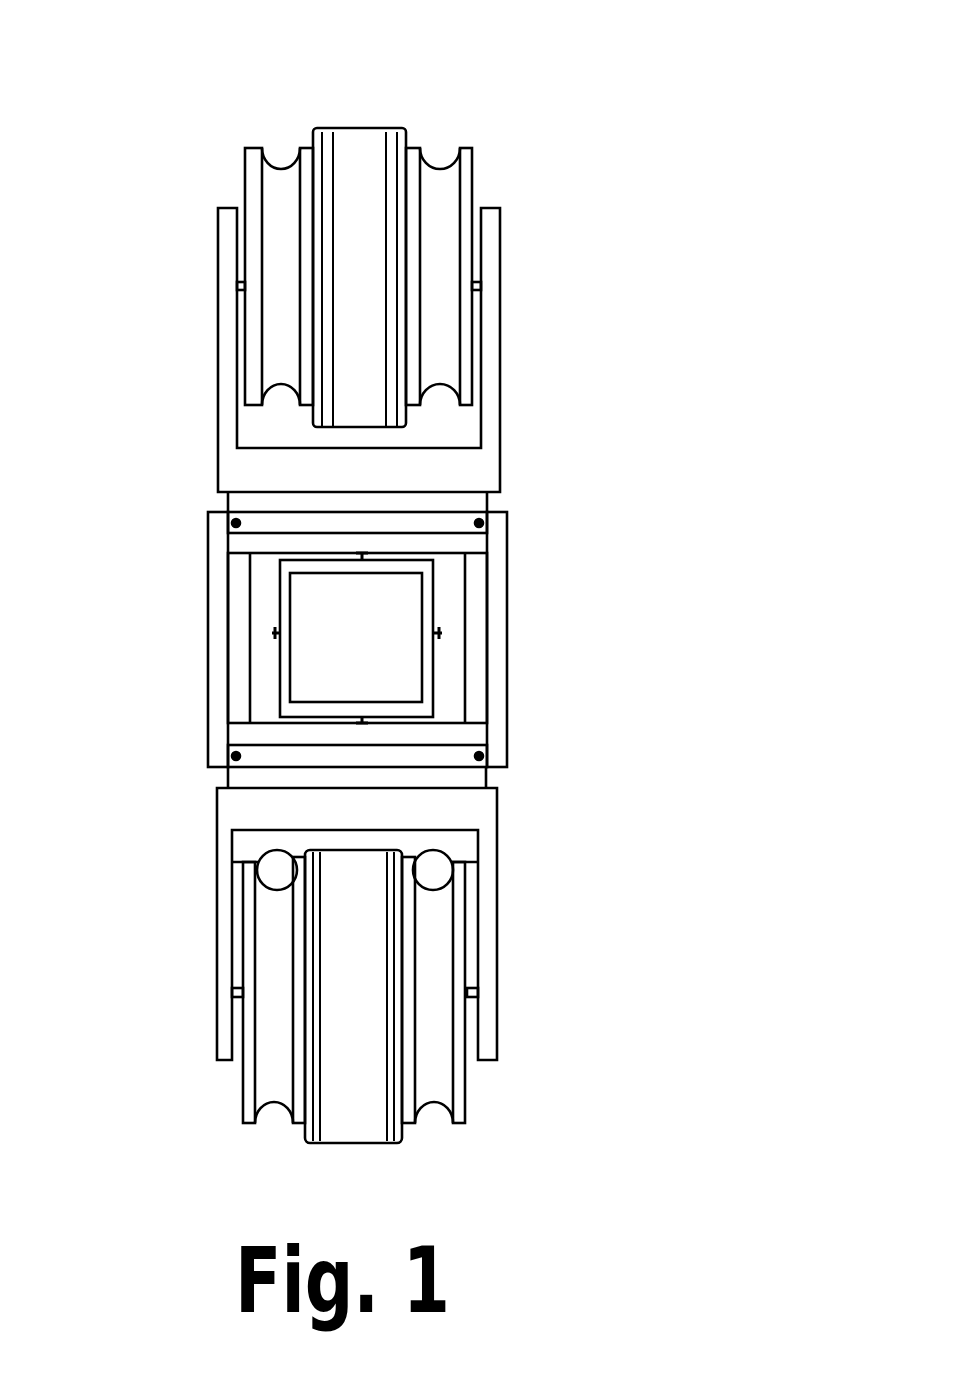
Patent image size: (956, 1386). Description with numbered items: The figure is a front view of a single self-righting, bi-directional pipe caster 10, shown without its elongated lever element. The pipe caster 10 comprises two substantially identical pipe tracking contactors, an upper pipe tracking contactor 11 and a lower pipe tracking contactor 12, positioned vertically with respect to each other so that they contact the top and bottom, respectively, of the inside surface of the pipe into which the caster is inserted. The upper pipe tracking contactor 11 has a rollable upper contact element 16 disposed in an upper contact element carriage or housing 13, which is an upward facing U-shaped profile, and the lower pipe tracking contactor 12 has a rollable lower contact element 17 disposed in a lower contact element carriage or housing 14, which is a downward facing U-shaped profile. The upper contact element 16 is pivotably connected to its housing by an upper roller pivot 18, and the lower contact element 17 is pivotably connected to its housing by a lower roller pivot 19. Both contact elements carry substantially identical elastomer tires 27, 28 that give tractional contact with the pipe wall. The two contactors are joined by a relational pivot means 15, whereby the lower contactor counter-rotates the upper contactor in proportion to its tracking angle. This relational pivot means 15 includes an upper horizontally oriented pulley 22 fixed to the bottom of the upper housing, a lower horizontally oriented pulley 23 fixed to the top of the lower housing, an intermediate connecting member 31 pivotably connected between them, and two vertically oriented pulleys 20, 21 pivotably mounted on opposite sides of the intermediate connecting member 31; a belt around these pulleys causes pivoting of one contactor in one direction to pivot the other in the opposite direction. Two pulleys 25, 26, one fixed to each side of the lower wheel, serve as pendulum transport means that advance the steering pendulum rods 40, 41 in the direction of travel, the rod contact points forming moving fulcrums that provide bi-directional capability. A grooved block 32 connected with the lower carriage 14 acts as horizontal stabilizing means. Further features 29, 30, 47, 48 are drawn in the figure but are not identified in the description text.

The pipe caster 10 is at (540, 150).
The upper pipe tracking contactor 11 is at (195, 290).
The lower pipe tracking contactor 12 is at (183, 958).
The upper contact element carriage or housing 13 is at (500, 320).
The lower contact element carriage or housing 14 is at (497, 890).
The relational pivot means 15 is at (563, 611).
The rollable upper contact element 16 is at (385, 128).
The rollable lower contact element 17 is at (372, 1146).
The upper roller pivot 18 is at (479, 282).
The lower roller pivot 19 is at (470, 988).
The vertically oriented pulley 20 is at (208, 620).
The vertically oriented pulley 21 is at (507, 640).
The upper horizontally oriented pulley 22 is at (487, 510).
The lower horizontally oriented pulley 23 is at (225, 768).
The pulley 25 is at (243, 1078).
The pulley 26 is at (465, 1080).
The elastomer tire 27 is at (340, 128).
The elastomer tire 28 is at (333, 1146).
The gimbal block 29 is at (437, 628).
The first pivot axis 30 is at (362, 558).
The intermediate connecting member 31 is at (437, 660).
The grooved block 32 is at (470, 843).
The rod 40 is at (452, 867).
The rod 41 is at (230, 863).
The right bearing race 47 is at (447, 845).
The left bearing race 48 is at (262, 848).